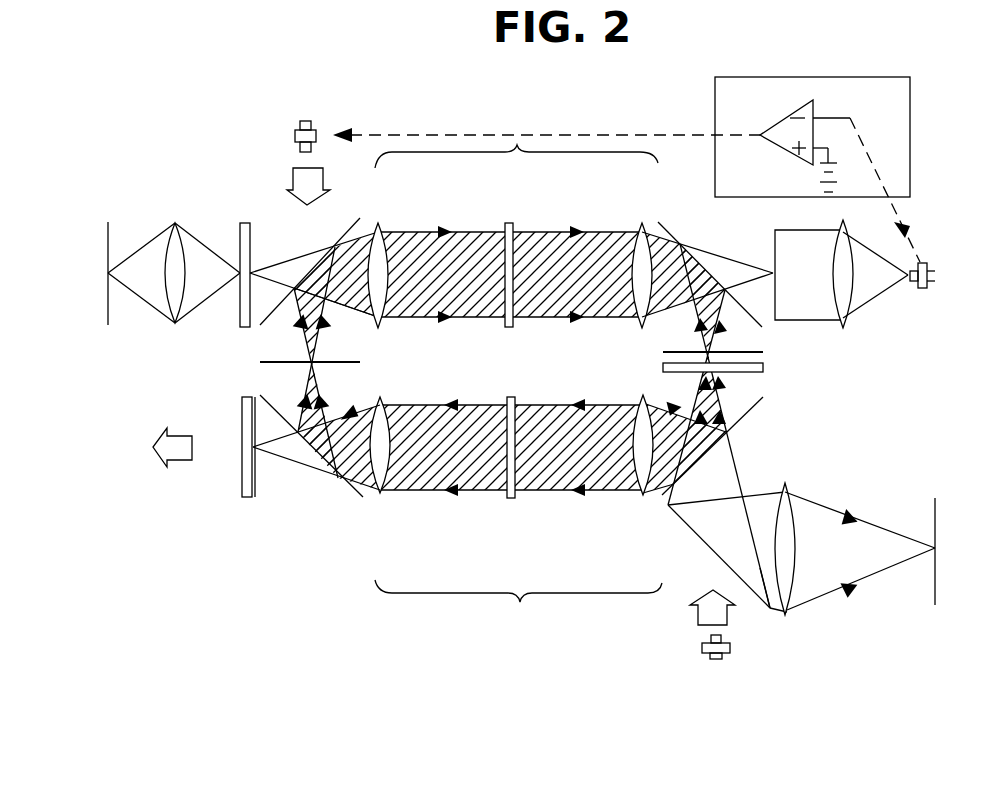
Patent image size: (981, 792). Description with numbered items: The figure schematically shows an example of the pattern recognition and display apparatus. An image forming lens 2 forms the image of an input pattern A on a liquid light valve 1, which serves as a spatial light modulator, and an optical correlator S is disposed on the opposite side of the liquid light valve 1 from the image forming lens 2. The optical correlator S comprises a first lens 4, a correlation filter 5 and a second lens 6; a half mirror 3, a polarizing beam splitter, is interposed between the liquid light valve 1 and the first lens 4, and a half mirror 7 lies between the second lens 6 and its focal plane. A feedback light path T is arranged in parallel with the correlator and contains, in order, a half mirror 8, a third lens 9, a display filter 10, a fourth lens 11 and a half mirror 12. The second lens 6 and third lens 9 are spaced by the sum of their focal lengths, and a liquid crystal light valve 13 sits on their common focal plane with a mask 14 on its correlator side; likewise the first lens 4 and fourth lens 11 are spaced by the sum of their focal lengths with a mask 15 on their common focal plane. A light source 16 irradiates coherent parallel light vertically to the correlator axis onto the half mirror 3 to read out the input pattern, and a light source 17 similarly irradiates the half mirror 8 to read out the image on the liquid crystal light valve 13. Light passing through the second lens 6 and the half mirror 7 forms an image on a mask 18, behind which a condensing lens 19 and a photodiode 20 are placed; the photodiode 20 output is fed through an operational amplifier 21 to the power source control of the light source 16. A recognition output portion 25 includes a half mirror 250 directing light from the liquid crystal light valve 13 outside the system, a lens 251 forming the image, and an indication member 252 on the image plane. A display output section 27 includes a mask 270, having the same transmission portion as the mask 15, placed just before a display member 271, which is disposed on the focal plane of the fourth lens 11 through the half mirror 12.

The input pattern A is at (108, 230).
The liquid light valve 1 is at (245, 224).
The image forming lens 2 is at (175, 224).
The half mirror (polarizing beam splitter) 3 is at (345, 228).
The first lens 4 is at (388, 226).
The correlation filter 5 is at (509, 223).
The second lens 6 is at (640, 223).
The half mirror 7 is at (664, 224).
The half mirror 8 is at (746, 418).
The third lens 9 is at (643, 500).
The display filter 10 is at (510, 500).
The fourth lens 11 is at (384, 496).
The half mirror 12 is at (362, 500).
The liquid crystal light valve 13 is at (765, 373).
The mask 14 is at (753, 353).
The mask 15 is at (265, 362).
The light source 16 is at (305, 120).
The light source 17 is at (716, 660).
The mask 18 is at (775, 230).
The condensing lens 19 is at (845, 222).
The photodiode 20 is at (930, 290).
The operational amplifier 21 is at (848, 77).
The recognition output portion 25 is at (807, 614).
The half mirror 250 is at (778, 621).
The lens 251 is at (790, 618).
The indication member 252 is at (935, 594).
The display output section 27 is at (271, 503).
The mask 270 is at (258, 483).
The display member 271 is at (246, 499).
The optical correlator S is at (518, 142).
The feedback light path T is at (520, 604).